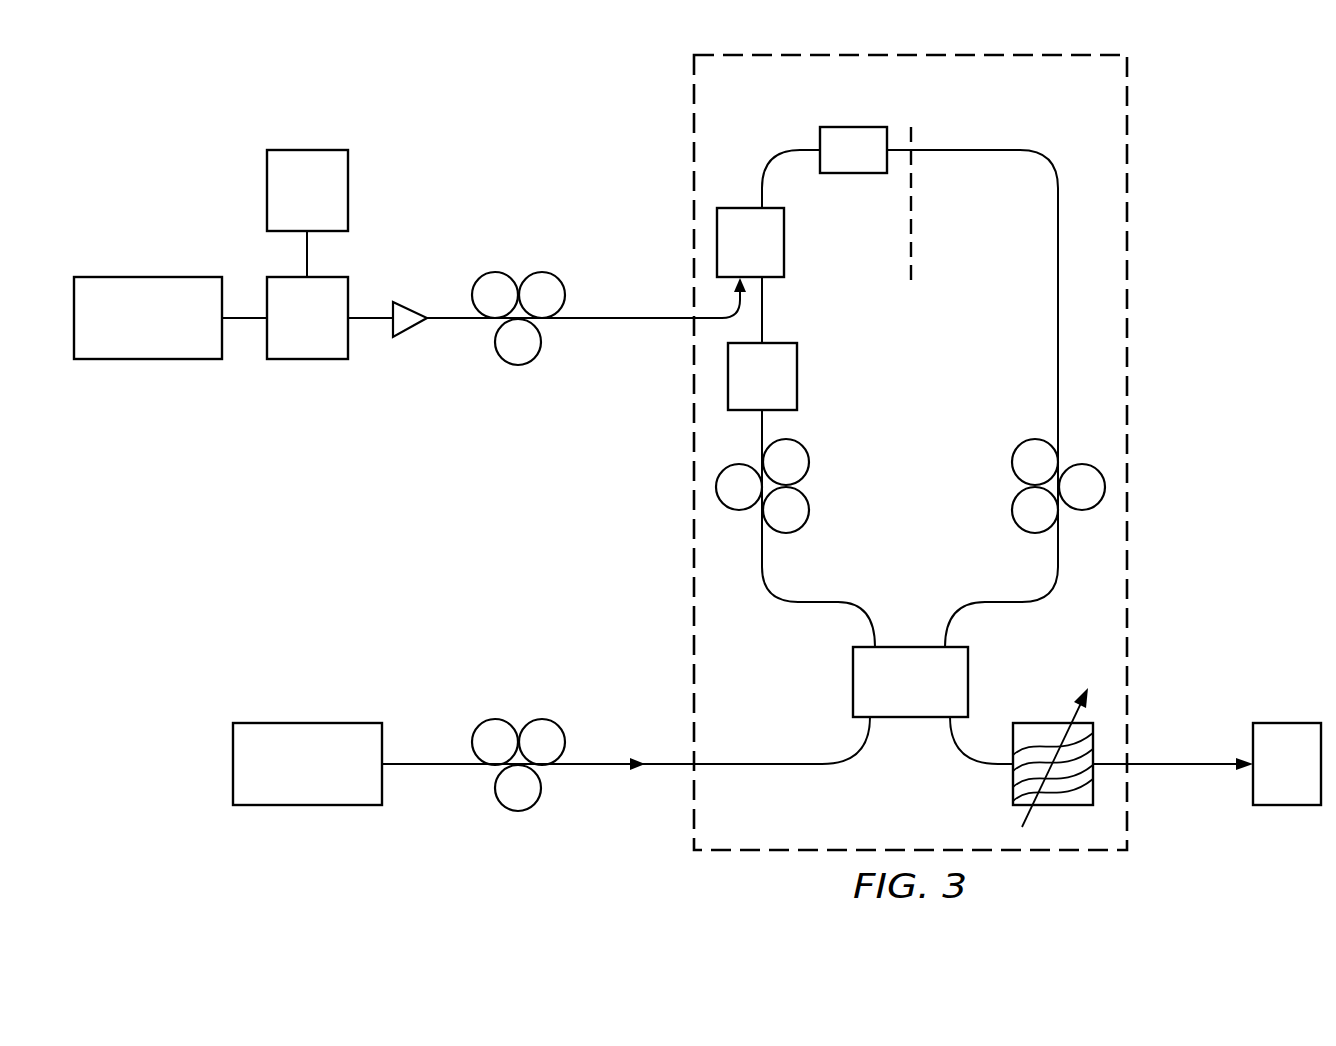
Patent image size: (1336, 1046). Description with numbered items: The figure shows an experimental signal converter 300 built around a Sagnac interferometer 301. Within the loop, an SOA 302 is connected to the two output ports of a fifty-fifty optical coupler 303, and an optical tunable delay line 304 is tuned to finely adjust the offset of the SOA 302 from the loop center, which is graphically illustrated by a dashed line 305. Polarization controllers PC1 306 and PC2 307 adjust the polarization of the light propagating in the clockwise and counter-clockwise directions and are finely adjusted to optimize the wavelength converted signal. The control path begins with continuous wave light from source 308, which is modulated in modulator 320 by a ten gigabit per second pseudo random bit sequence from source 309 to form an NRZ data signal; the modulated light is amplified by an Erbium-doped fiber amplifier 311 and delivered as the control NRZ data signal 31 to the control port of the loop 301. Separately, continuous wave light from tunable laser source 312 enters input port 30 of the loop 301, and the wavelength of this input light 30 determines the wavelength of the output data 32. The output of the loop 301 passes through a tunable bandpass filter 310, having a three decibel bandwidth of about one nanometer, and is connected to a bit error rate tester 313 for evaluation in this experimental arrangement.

The signal converter 300 is at (1234, 258).
The Sagnac interferometer 301 is at (682, 501).
The SOA 302 is at (842, 126).
The 50:50 optical coupler 303 is at (912, 719).
The optical tunable delay line 304 is at (798, 375).
The loop center line 305 is at (913, 196).
The polarization controller PC1 306 is at (842, 481).
The polarization controller PC2 307 is at (976, 487).
The continuous wave light source 308 is at (147, 276).
The pseudo random bit sequence source 309 is at (297, 149).
The tunable bandpass filter 310 is at (1050, 722).
The Erbium-doped fiber amplifier 311 is at (411, 331).
The tunable laser source 312 is at (307, 807).
The bit error rate tester 313 is at (1285, 808).
The modulator 320 is at (297, 361).
The input light 30 is at (596, 767).
The control NRZ data signal 31 is at (623, 324).
The output data 32 is at (1190, 767).